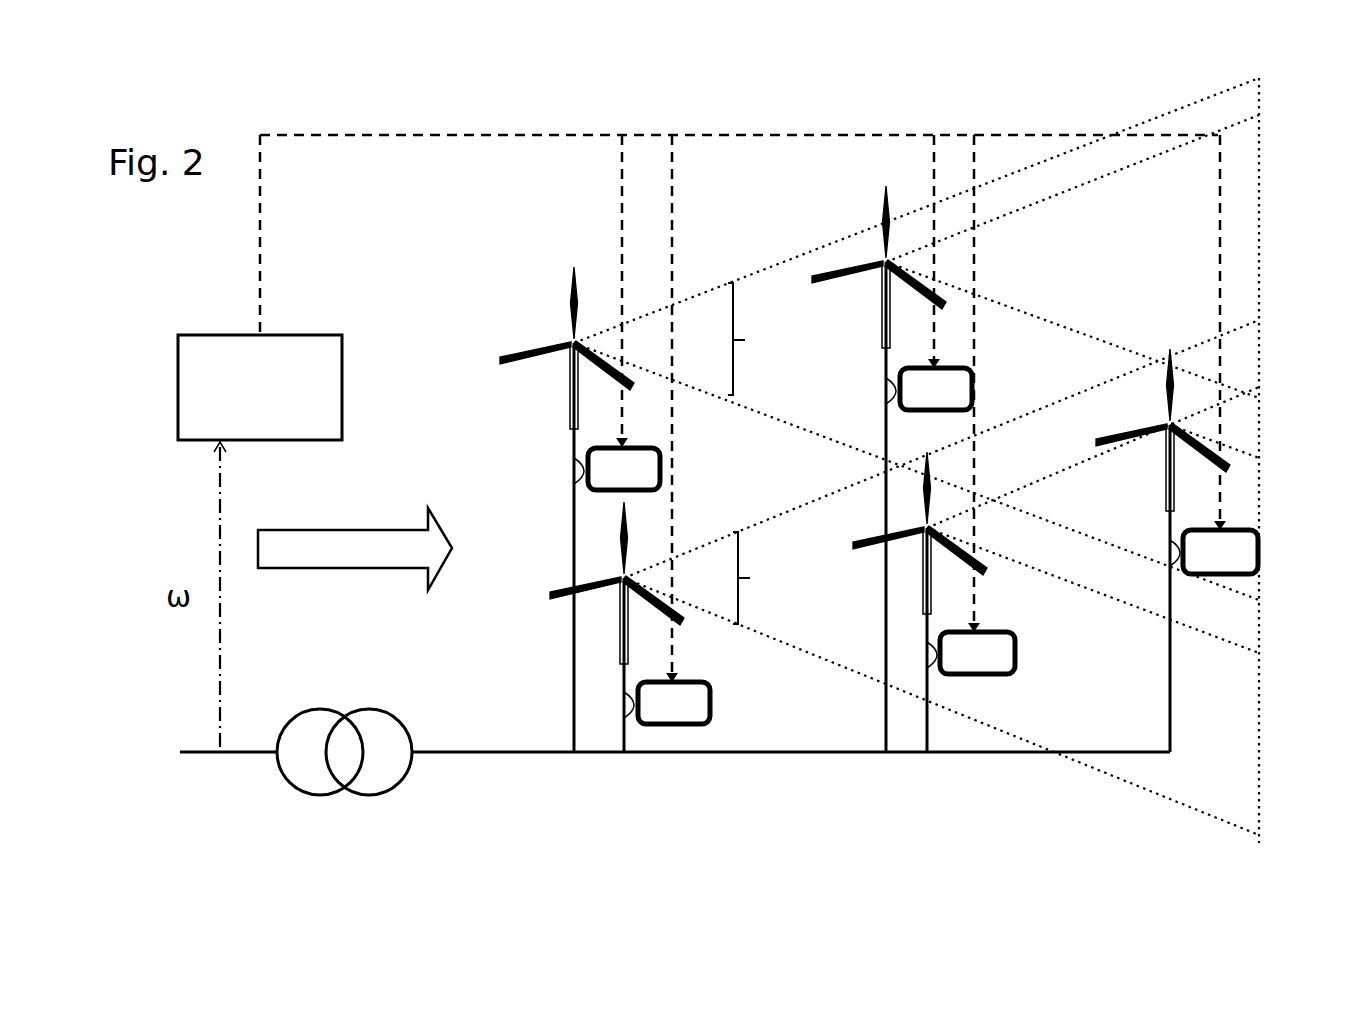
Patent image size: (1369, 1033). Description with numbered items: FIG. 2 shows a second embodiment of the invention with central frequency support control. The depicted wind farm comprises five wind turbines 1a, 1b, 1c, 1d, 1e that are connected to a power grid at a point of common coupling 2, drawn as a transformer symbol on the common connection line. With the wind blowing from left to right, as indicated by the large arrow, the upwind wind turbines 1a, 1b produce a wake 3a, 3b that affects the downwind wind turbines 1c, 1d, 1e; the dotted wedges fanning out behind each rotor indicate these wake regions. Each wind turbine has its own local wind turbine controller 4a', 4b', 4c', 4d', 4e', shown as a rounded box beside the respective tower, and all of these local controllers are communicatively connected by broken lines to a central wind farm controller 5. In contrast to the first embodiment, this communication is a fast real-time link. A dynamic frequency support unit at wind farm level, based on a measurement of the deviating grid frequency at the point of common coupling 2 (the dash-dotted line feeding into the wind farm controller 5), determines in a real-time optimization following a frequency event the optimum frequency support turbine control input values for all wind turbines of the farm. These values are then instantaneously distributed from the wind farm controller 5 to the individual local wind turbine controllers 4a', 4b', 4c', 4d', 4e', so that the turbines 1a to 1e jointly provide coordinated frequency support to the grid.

The wind turbine 1a is at (556, 340).
The wind turbine 1b is at (588, 557).
The wind turbine 1c is at (868, 290).
The wind turbine 1d is at (858, 545).
The wind turbine 1e is at (1148, 448).
The point of common coupling 2 is at (410, 777).
The wake 3a is at (754, 339).
The wake 3b is at (759, 578).
The local wind turbine controller 4a' is at (661, 483).
The local wind turbine controller 4b' is at (718, 715).
The local wind turbine controller 4c' is at (975, 409).
The local wind turbine controller 4d' is at (1020, 669).
The local wind turbine controller 4e' is at (1262, 567).
The wind farm controller 5 is at (372, 405).